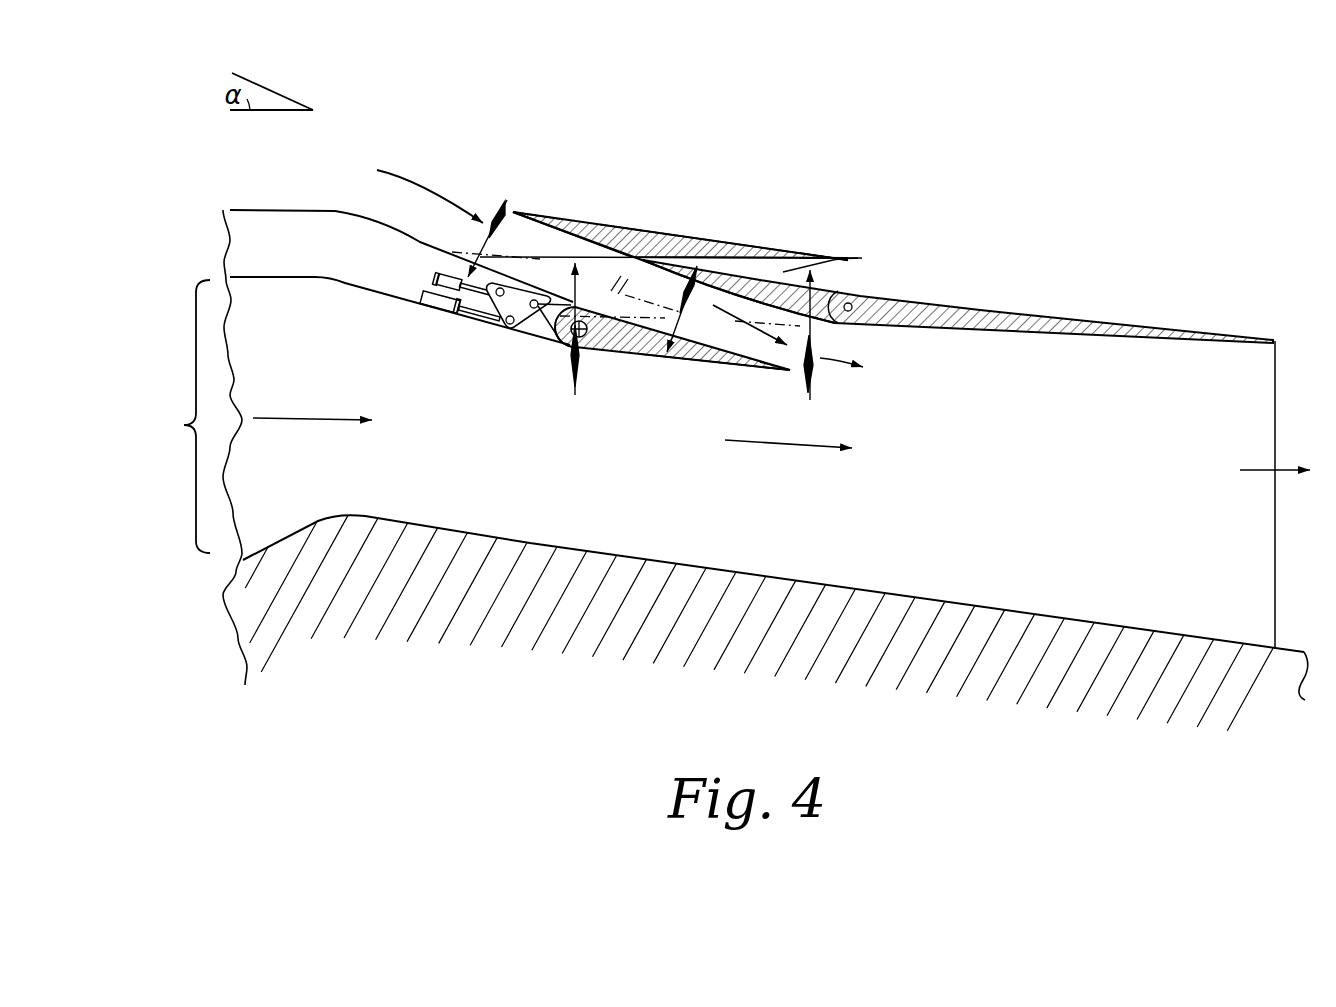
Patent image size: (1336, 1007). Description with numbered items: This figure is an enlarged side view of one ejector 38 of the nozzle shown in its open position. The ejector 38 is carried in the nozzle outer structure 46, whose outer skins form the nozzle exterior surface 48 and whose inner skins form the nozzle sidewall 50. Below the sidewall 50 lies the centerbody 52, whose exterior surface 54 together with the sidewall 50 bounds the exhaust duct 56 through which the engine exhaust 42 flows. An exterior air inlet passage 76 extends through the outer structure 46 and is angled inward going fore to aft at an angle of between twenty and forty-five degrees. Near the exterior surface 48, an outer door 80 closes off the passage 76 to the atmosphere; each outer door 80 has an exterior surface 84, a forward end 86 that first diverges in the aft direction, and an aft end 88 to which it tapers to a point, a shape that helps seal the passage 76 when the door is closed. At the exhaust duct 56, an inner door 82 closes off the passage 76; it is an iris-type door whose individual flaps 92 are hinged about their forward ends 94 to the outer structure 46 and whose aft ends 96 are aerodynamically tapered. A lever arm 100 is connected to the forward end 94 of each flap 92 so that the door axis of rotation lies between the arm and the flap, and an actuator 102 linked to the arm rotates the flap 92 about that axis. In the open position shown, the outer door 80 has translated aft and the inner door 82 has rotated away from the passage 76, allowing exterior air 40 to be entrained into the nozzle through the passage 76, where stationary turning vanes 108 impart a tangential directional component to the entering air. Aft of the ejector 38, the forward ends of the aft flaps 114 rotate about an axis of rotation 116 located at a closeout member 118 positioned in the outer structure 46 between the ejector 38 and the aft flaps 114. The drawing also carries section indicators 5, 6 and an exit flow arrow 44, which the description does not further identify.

The section line 5- 5 is at (692, 331).
The section line 6- 6 is at (626, 276).
The ejector 38 is at (768, 154).
The exterior air 40 is at (422, 172).
The engine exhaust 42 is at (280, 420).
The exhaust flow exit 44 is at (1285, 470).
The outer structure 46 is at (292, 222).
The nozzle exterior surface 48 is at (243, 208).
The nozzle sidewall 50 is at (263, 279).
The centerbody 52 is at (430, 522).
The centerbody exterior surface 54 is at (498, 537).
The exhaust duct 56 is at (178, 416).
The exterior air inlet passage 76 is at (433, 222).
The outer door 80 is at (740, 245).
The inner door 82 is at (622, 354).
The exterior surface 84 is at (795, 257).
The forward end 86 is at (551, 219).
The aft end 88 is at (845, 258).
The flap 92 is at (692, 362).
The forward end 94 is at (597, 350).
The aft end 96 is at (793, 372).
The lever arm 100 is at (547, 317).
The actuator 102 is at (433, 303).
The turning vane 108 is at (558, 258).
The aft flap 114 is at (985, 308).
The axis of rotation 116 is at (852, 305).
The closeout member 118 is at (832, 262).